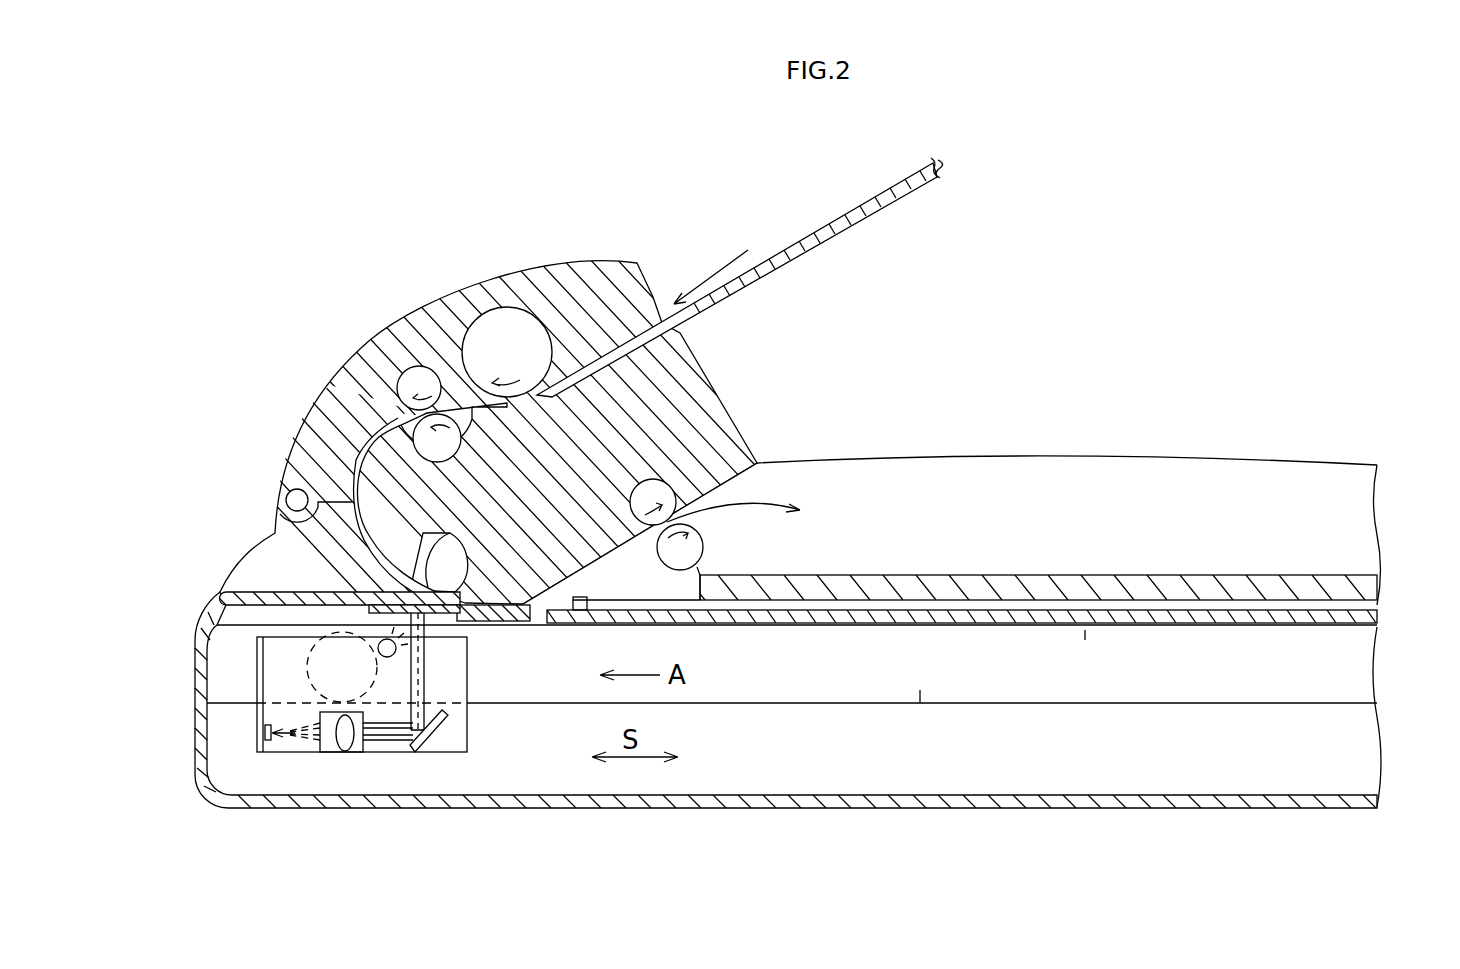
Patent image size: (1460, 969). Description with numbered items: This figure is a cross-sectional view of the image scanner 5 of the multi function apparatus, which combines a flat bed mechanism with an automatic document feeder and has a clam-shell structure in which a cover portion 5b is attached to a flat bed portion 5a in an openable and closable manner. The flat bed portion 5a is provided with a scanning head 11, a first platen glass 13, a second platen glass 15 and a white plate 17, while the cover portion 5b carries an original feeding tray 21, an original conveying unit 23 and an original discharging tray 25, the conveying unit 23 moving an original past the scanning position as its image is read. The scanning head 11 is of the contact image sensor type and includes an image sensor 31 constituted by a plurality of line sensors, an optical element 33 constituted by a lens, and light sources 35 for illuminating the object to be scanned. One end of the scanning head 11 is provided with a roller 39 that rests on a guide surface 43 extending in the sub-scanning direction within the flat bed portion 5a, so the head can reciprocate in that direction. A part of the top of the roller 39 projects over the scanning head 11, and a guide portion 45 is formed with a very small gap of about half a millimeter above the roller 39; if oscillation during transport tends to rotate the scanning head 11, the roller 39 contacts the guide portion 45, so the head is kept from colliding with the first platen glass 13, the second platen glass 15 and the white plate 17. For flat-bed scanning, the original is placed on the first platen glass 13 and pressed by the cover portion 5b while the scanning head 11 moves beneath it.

The image scanner 5 is at (1194, 346).
The flat bed portion 5a is at (1345, 738).
The cover portion 5b is at (1340, 520).
The scanning head 11 is at (447, 743).
The first platen glass 13 is at (789, 615).
The second platen glass 15 is at (502, 617).
The white plate 17 is at (400, 612).
The original feeding tray 21 is at (803, 250).
The original conveying unit 23 is at (343, 383).
The original discharging tray 25 is at (905, 575).
The image sensor 31 is at (423, 748).
The optical element 33 is at (277, 752).
The light sources 35 is at (378, 655).
The roller 39 is at (307, 667).
The guide surface 43 is at (920, 690).
The guide portion 45 is at (1085, 630).